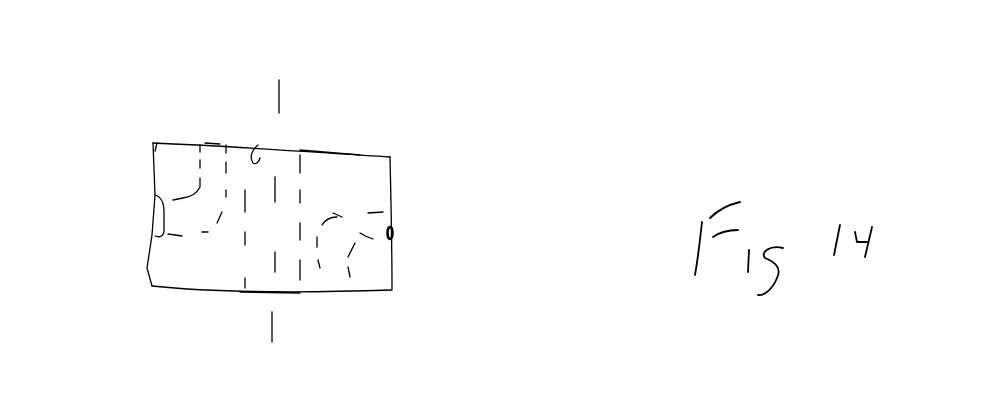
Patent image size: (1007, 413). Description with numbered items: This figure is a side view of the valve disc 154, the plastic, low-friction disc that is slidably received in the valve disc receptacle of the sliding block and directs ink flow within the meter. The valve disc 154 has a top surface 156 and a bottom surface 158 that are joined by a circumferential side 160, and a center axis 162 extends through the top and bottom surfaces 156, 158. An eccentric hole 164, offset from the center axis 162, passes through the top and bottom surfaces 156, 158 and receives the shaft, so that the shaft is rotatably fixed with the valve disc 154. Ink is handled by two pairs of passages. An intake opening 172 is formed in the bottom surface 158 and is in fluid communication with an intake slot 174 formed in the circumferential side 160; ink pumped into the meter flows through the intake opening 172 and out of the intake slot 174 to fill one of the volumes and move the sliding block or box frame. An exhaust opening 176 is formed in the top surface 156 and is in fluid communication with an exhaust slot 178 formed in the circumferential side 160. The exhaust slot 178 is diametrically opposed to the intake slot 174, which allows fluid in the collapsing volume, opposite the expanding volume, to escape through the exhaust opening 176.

The valve disc 154 is at (557, 117).
The top surface 156 is at (378, 103).
The bottom surface 158 is at (317, 342).
The circumferential side 160 is at (437, 190).
The center axis 162 is at (285, 90).
The eccentric hole 164 is at (257, 140).
The intake opening 172 is at (390, 333).
The intake slot 174 is at (443, 240).
The exhaust opening 176 is at (213, 140).
The exhaust slot 178 is at (155, 216).